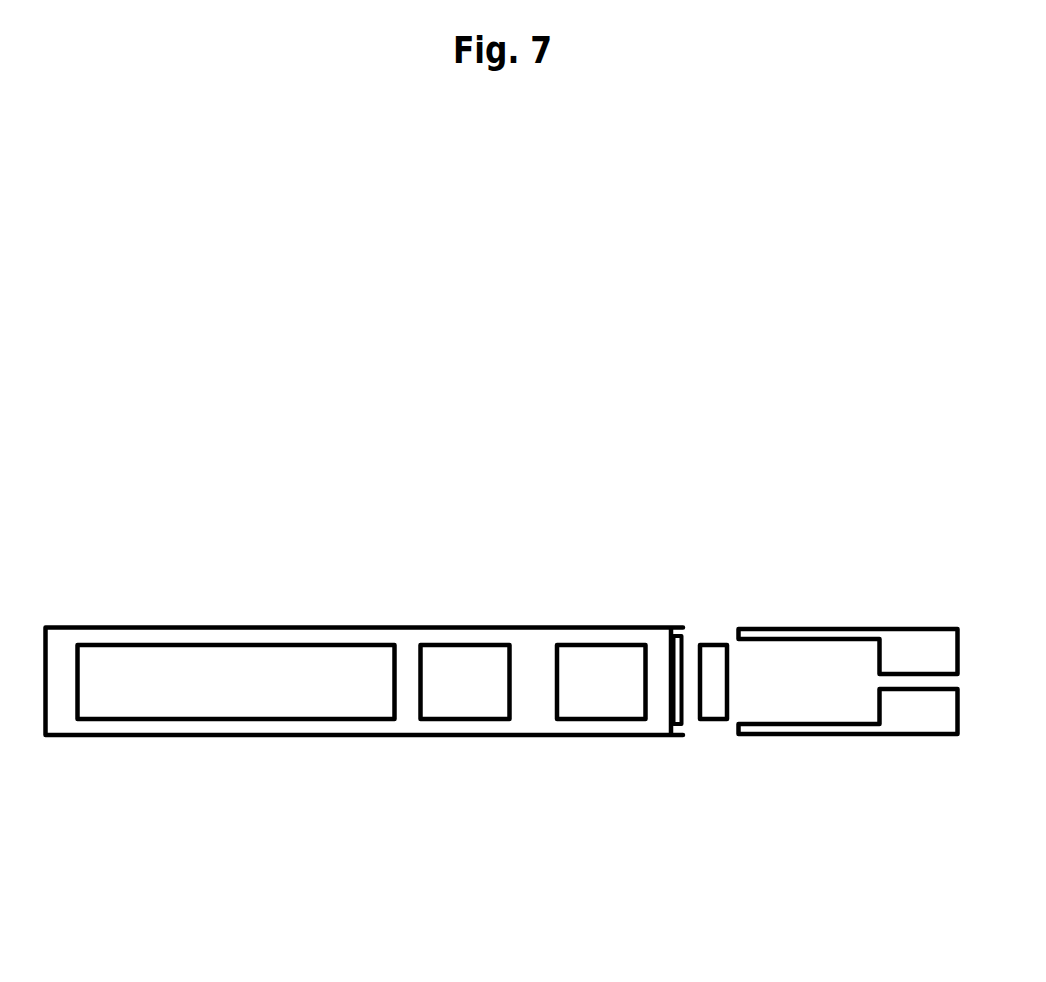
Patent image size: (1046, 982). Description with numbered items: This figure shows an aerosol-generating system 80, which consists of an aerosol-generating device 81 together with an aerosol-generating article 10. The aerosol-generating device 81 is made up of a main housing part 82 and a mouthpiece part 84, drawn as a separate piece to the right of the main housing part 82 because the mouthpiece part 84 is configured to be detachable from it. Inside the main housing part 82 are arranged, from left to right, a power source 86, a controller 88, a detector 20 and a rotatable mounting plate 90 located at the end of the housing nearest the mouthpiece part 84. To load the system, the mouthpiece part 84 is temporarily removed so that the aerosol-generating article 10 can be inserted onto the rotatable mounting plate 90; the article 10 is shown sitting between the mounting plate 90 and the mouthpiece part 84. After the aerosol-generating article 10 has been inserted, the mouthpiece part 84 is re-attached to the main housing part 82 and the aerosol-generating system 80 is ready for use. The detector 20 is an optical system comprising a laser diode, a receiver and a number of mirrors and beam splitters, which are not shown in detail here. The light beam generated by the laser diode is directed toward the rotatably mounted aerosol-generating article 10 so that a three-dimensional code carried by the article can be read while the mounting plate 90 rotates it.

The aerosol-generating system 80 is at (707, 338).
The aerosol-generating device 81 is at (320, 838).
The main housing part 82 is at (310, 625).
The mouthpiece part 84 is at (912, 627).
The power source 86 is at (198, 653).
The controller 88 is at (472, 655).
The detector 20 is at (602, 655).
The aerosol-generating article 10 is at (720, 640).
The rotatable mounting plate 90 is at (675, 732).